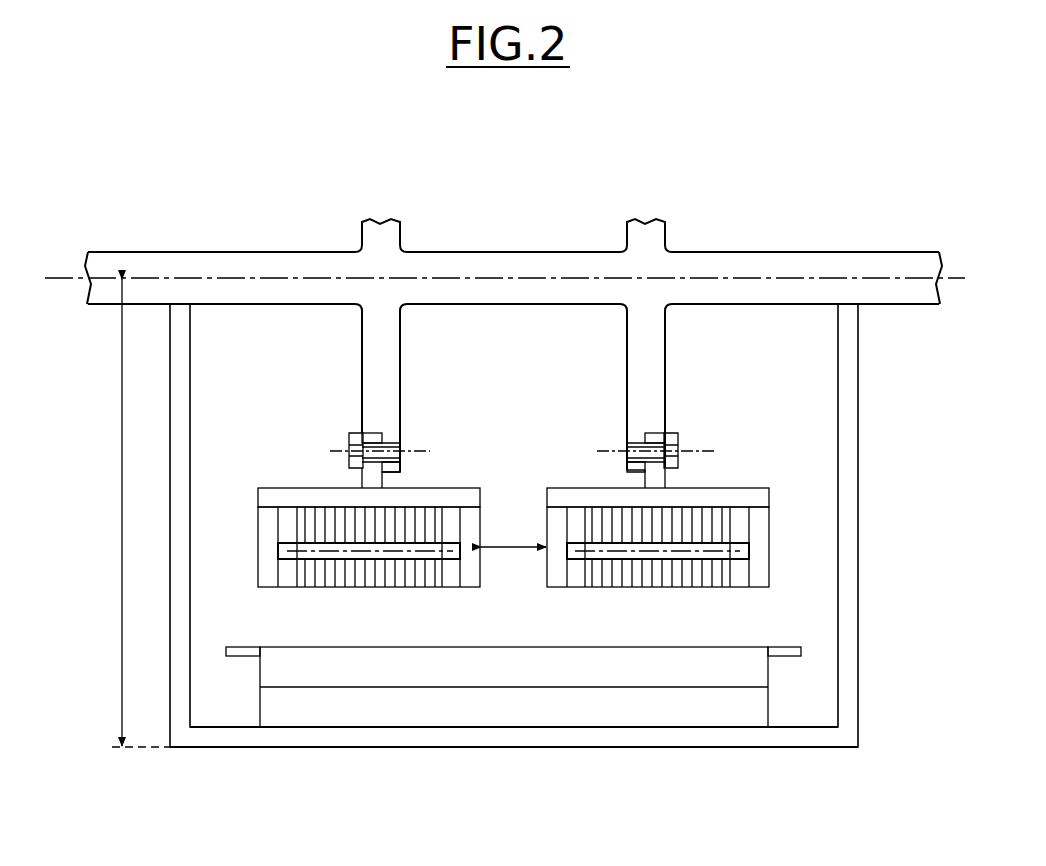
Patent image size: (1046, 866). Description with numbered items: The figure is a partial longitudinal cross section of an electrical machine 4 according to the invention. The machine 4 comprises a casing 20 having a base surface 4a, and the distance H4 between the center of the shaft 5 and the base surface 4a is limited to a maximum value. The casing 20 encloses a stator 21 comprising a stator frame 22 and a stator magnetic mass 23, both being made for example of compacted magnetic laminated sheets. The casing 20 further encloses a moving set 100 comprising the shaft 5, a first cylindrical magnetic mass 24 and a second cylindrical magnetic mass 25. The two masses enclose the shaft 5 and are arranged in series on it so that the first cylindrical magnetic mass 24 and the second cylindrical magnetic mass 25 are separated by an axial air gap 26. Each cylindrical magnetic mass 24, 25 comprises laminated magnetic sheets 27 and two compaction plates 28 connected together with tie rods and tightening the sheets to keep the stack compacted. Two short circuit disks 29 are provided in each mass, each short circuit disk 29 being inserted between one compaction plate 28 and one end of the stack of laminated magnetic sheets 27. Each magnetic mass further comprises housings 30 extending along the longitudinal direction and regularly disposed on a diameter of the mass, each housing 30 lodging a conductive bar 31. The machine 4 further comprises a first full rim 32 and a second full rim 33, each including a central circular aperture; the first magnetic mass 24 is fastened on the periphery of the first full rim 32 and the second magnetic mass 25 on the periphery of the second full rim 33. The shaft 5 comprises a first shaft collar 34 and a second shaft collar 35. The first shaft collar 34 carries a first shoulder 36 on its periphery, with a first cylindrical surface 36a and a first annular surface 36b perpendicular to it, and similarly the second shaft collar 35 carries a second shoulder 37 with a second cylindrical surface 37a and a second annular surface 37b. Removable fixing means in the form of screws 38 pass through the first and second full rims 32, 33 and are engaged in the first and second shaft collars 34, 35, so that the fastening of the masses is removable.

The machine 4 is at (106, 216).
The base surface 4a is at (496, 750).
The shaft 5 is at (170, 258).
The moving set 100 is at (735, 230).
The casing 20 is at (850, 675).
The stator 21 is at (797, 710).
The stator frame 22 is at (630, 710).
The stator magnetic mass 23 is at (749, 663).
The first cylindrical magnetic mass 24 is at (482, 430).
The second cylindrical magnetic mass 25 is at (545, 430).
The axial air gap 26 is at (513, 545).
The laminated magnetic sheets 27 is at (338, 588).
The compaction plates 28 is at (262, 588).
The short circuit disks 29 is at (297, 588).
The housings 30 is at (396, 588).
The conductive bar 31 is at (310, 548).
The first full rim 32 is at (292, 486).
The second full rim 33 is at (735, 486).
The first shaft collar 34 is at (402, 343).
The second shaft collar 35 is at (667, 343).
The first shoulder 36 is at (359, 432).
The first cylindrical surface 36a is at (381, 432).
The first annular surface 36b is at (401, 447).
The second shoulder 37 is at (668, 432).
The second cylindrical surface 37a is at (646, 432).
The second annular surface 37b is at (626, 447).
The screws 38 is at (404, 462).
The distance H4 is at (122, 512).